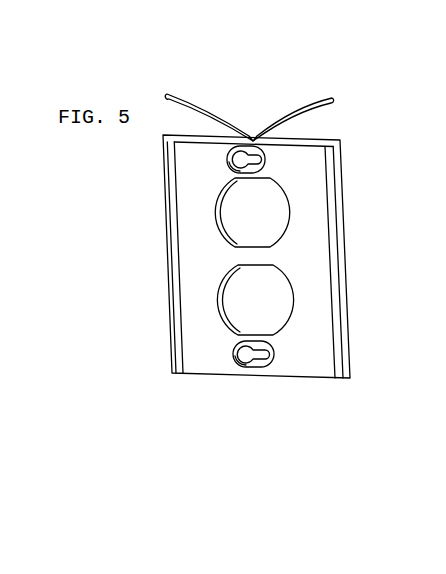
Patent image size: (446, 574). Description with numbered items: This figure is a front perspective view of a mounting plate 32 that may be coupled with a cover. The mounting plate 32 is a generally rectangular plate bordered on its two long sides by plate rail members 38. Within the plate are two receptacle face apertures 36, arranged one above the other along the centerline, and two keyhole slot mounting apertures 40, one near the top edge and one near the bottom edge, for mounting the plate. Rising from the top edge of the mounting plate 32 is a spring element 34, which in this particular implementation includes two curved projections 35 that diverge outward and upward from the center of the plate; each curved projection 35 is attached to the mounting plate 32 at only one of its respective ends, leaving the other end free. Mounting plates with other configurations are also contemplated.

The mounting plate 32 is at (347, 128).
The spring element 34 is at (249, 94).
The curved projection 35 is at (189, 103).
The receptacle face apertures 36 is at (262, 217).
The plate rail members 38 is at (168, 219).
The keyhole slot mounting apertures 40 is at (252, 366).